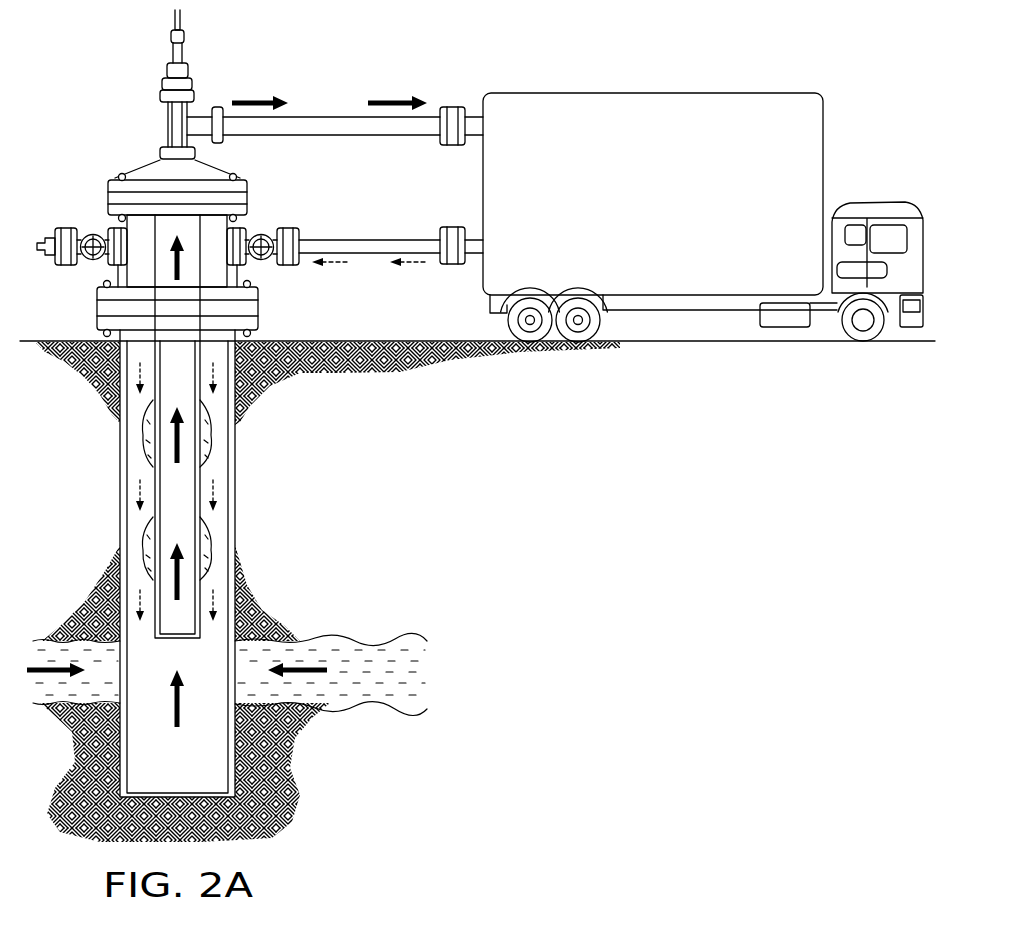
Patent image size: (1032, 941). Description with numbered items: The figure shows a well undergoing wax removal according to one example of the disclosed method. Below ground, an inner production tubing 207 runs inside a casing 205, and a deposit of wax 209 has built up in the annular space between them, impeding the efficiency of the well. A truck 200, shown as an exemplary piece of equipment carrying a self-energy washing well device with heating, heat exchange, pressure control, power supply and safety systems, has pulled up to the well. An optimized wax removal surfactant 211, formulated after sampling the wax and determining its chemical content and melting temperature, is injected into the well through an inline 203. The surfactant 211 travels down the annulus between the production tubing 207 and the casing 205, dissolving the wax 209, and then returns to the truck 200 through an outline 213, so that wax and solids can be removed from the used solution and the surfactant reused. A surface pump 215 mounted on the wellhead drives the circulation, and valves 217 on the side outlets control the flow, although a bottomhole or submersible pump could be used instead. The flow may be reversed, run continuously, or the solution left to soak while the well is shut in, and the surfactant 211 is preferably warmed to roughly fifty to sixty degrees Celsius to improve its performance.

The truck 200 is at (858, 201).
The inline 203 is at (368, 254).
The casing 205 is at (235, 458).
The inner production tubing 207 is at (153, 472).
The wax 209 is at (148, 525).
The optimized wax removal surfactant 211 is at (217, 487).
The outline 213 is at (323, 114).
The surface pump 215 is at (149, 164).
The valves 217 is at (92, 233).